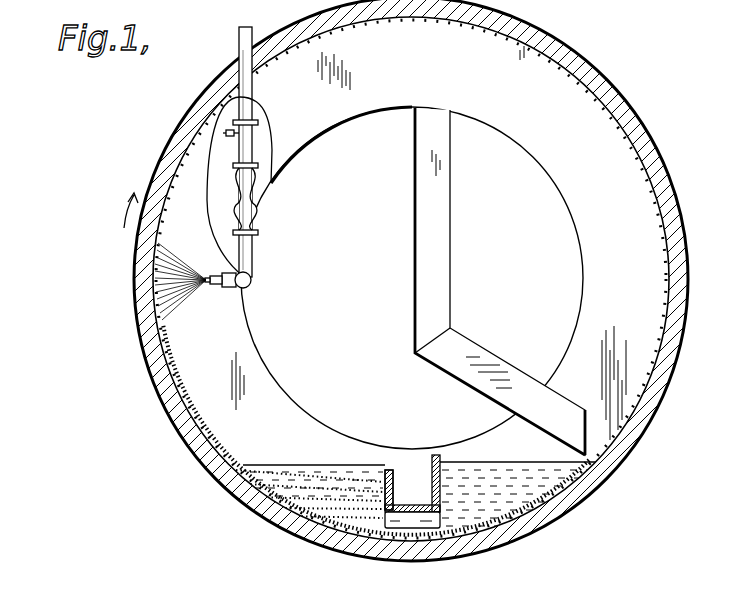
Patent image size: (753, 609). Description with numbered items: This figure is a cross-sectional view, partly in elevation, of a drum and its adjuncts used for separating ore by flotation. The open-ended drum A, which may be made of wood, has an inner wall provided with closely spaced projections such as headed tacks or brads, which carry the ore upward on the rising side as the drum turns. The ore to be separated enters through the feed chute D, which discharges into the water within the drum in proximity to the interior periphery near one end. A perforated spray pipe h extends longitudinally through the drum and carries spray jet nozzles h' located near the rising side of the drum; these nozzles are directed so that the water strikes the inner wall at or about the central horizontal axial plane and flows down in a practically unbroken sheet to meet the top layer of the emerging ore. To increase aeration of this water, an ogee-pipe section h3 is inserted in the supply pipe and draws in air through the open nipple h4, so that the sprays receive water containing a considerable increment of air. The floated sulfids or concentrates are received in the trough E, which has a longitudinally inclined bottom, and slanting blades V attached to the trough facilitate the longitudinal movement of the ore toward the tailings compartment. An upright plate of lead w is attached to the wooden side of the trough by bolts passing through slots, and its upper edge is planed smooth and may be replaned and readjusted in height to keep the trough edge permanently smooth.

The drum A is at (152, 365).
The feed chute D is at (452, 284).
The trough E is at (412, 483).
The slanting blades V is at (407, 520).
The upright plate of lead w is at (392, 470).
The perforated spray pipe h is at (251, 270).
The spray jet nozzles h' is at (190, 281).
The ogee-pipe section h3 is at (252, 197).
The open nipple h4 is at (250, 140).